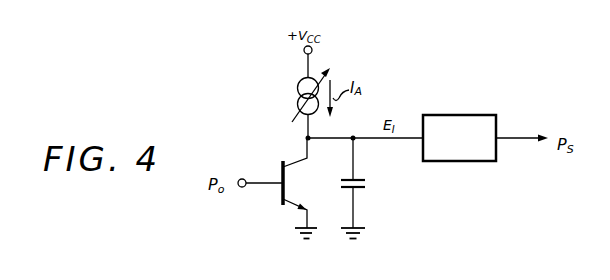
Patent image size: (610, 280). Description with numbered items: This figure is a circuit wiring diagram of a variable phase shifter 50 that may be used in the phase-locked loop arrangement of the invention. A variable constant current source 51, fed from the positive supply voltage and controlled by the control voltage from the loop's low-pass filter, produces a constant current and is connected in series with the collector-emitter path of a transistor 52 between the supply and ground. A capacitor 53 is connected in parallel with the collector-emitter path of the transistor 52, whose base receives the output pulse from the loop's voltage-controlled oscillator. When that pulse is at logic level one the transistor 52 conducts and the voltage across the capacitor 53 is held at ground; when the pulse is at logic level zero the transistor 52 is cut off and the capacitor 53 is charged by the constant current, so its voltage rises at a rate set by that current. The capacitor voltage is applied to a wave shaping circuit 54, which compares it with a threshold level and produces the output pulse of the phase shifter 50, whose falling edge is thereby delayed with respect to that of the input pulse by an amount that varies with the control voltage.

The variable phase shifter 50 is at (446, 222).
The variable constant current source 51 is at (297, 88).
The transistor 52 is at (295, 171).
The capacitor 53 is at (364, 184).
The wave shaping circuit 54 is at (463, 162).